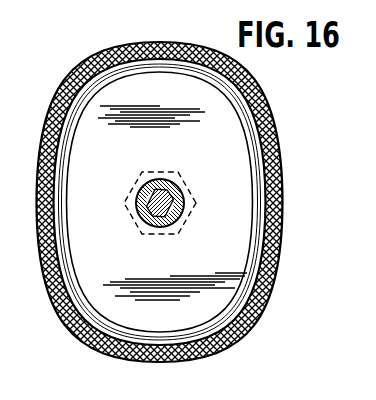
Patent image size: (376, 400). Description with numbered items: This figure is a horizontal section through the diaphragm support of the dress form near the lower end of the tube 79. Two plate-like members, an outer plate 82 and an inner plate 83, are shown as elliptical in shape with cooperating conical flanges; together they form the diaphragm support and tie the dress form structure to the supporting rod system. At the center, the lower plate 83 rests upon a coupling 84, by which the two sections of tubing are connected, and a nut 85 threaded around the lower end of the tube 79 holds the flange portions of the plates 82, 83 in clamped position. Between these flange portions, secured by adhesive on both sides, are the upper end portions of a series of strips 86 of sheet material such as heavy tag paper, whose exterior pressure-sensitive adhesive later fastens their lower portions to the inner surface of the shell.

The tube 79 is at (177, 193).
The outer plate 82 is at (274, 122).
The inner plate 83 is at (267, 152).
The coupling 84 is at (143, 217).
The nut 85 is at (135, 188).
The strips 86 is at (282, 206).